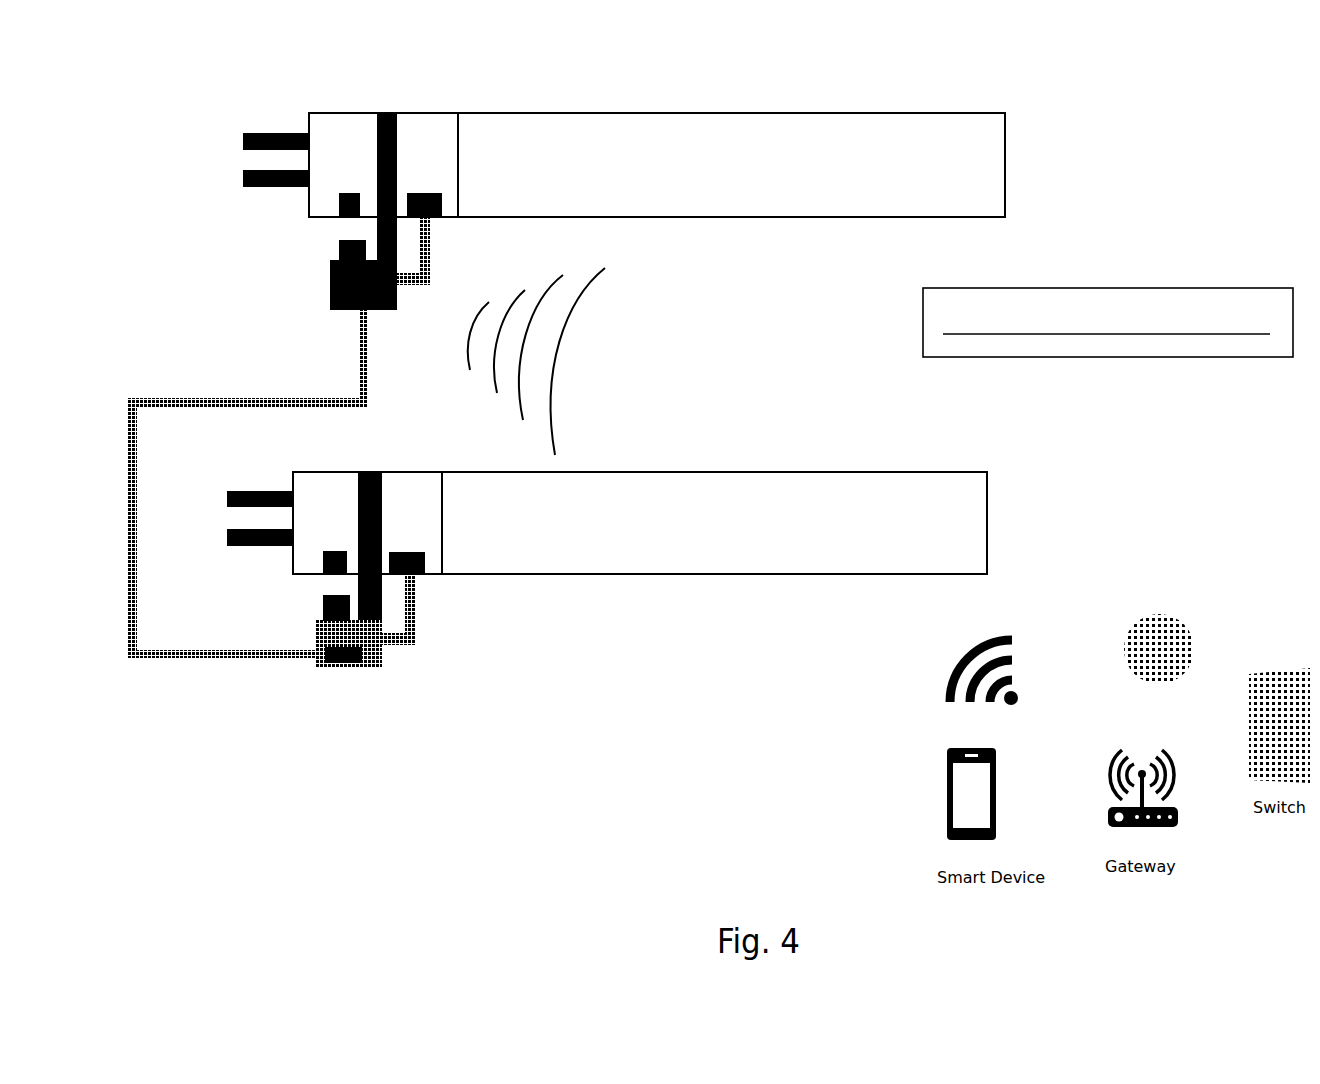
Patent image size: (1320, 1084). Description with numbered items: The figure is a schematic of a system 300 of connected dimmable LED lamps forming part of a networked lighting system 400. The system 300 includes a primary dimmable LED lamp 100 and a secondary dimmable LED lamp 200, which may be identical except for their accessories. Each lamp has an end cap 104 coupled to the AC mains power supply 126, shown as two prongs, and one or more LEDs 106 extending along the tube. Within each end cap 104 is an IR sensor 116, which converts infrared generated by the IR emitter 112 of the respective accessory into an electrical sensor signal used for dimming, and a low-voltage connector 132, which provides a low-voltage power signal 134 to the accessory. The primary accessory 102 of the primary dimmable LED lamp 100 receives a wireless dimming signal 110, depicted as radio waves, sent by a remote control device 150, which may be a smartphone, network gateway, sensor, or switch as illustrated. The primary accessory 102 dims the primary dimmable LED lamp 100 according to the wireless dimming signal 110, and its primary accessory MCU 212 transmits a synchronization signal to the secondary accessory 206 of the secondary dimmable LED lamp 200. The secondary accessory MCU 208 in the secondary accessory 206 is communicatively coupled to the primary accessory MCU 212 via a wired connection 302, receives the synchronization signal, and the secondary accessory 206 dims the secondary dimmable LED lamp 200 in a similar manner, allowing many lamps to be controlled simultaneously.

The primary dimmable LED lamp 100 is at (957, 76).
The secondary dimmable LED lamp 200 is at (955, 437).
The system of connected dimmable LED lamps 300 is at (230, 359).
The networked lighting system 400 is at (1108, 322).
The primary accessory 102 is at (330, 293).
The end cap 104 is at (430, 112).
The LEDs 106 is at (790, 112).
The wireless dimming signal 110 is at (575, 260).
The IR emitter 112 is at (339, 250).
The IR sensor 116 is at (365, 185).
The AC mains power supply 126 is at (279, 105).
The low-voltage connector 132 is at (437, 220).
The low-voltage power signal 134 is at (426, 286).
The remote control device 150 is at (1131, 594).
The secondary accessory 206 is at (312, 640).
The secondary accessory MCU 208 is at (325, 662).
The primary accessory MCU 212 is at (346, 304).
The wired connection 302 is at (156, 397).